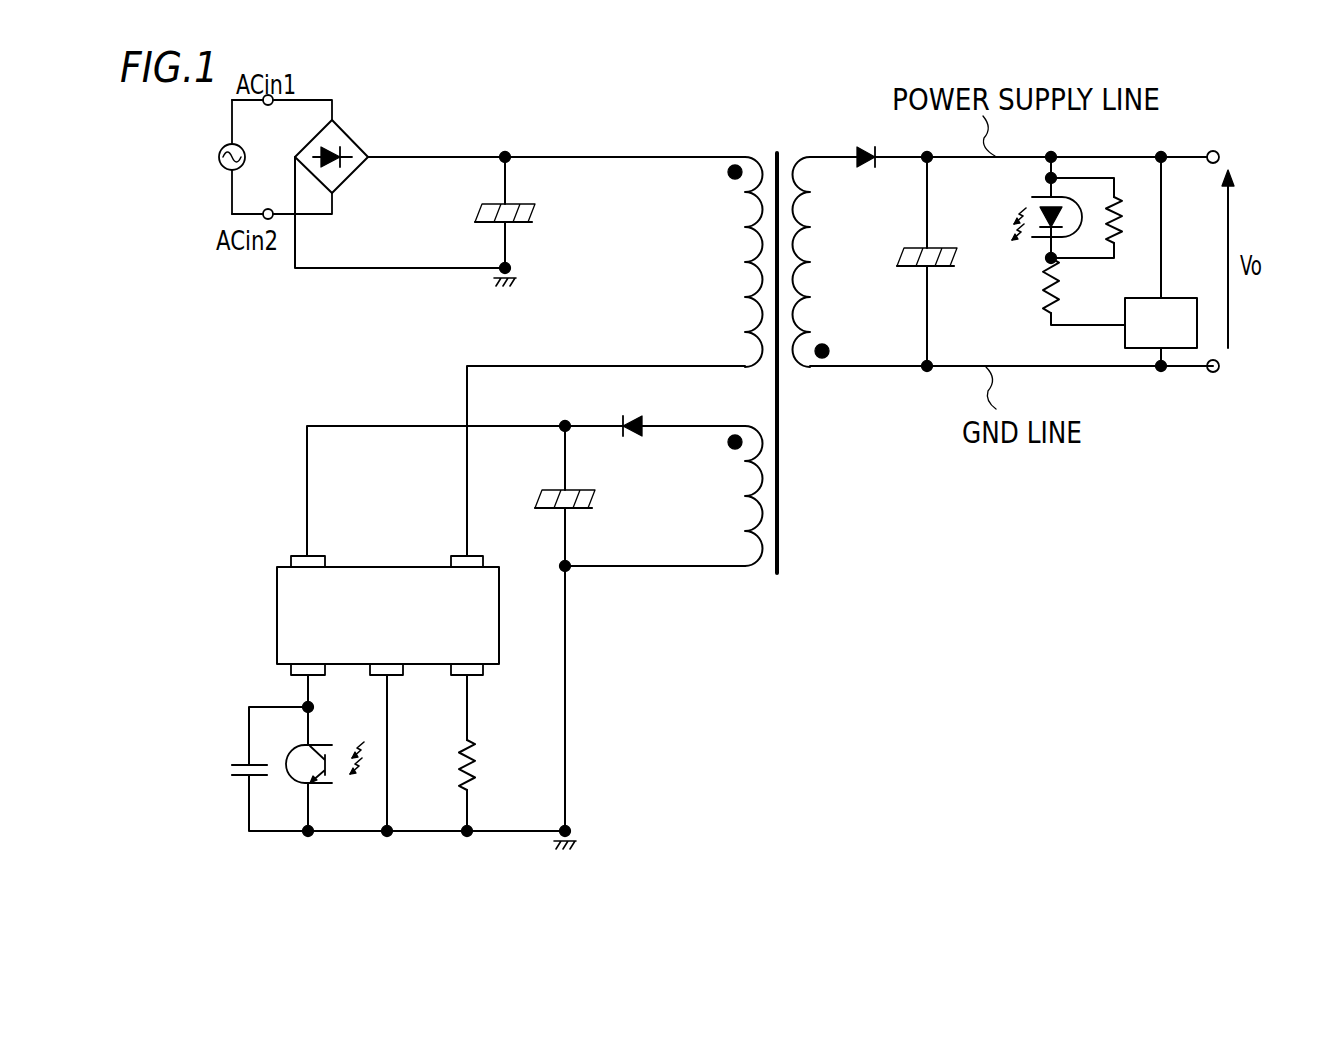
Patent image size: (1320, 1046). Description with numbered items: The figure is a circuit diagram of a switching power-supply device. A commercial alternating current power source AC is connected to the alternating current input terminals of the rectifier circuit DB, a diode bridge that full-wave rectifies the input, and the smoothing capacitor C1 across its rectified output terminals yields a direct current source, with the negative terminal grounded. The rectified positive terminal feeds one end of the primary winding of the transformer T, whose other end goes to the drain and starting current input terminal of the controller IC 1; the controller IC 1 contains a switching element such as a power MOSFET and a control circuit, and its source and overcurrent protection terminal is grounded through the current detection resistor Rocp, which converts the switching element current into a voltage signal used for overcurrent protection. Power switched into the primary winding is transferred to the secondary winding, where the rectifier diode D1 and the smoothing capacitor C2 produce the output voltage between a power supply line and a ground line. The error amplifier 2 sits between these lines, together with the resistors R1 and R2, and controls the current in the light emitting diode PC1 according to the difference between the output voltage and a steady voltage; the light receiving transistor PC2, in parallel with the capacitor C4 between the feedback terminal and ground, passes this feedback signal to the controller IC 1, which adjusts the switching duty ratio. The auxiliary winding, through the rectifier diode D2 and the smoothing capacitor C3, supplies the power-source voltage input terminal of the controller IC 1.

The controller IC 1 is at (277, 607).
The error amplifier 2 is at (1176, 298).
The commercial alternating current power source AC is at (214, 160).
The rectifier circuit DB is at (340, 156).
The smoothing capacitor C1 is at (502, 212).
The transformer T is at (775, 344).
The rectifier diode D1 is at (869, 140).
The rectifier diode D2 is at (633, 412).
The smoothing capacitor C2 is at (925, 242).
The smoothing capacitor C3 is at (562, 484).
The capacitor C4 is at (256, 756).
The resistor R1 is at (1129, 220).
The resistor R2 is at (1066, 285).
The light emitting diode PC1 is at (1035, 204).
The light receiving transistor PC2 is at (325, 779).
The current detection resistor Rocp is at (494, 765).